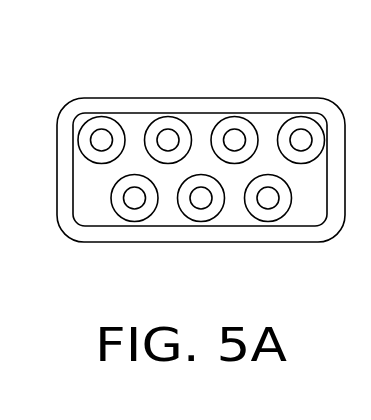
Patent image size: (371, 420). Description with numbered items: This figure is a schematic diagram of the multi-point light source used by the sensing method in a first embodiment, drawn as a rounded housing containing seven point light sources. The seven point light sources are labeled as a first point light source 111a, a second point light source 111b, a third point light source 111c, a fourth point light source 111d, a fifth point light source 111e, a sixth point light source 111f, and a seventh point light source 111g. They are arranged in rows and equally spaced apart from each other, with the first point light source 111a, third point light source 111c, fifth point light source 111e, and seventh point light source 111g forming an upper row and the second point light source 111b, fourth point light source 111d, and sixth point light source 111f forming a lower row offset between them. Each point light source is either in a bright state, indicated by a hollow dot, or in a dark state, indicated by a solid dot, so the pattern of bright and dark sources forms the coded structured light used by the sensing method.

The first point light source 111a is at (101, 140).
The second point light source 111b is at (134, 198).
The third point light source 111c is at (167, 140).
The fourth point light source 111d is at (201, 198).
The fifth point light source 111e is at (234, 140).
The sixth point light source 111f is at (268, 198).
The seventh point light source 111g is at (301, 140).